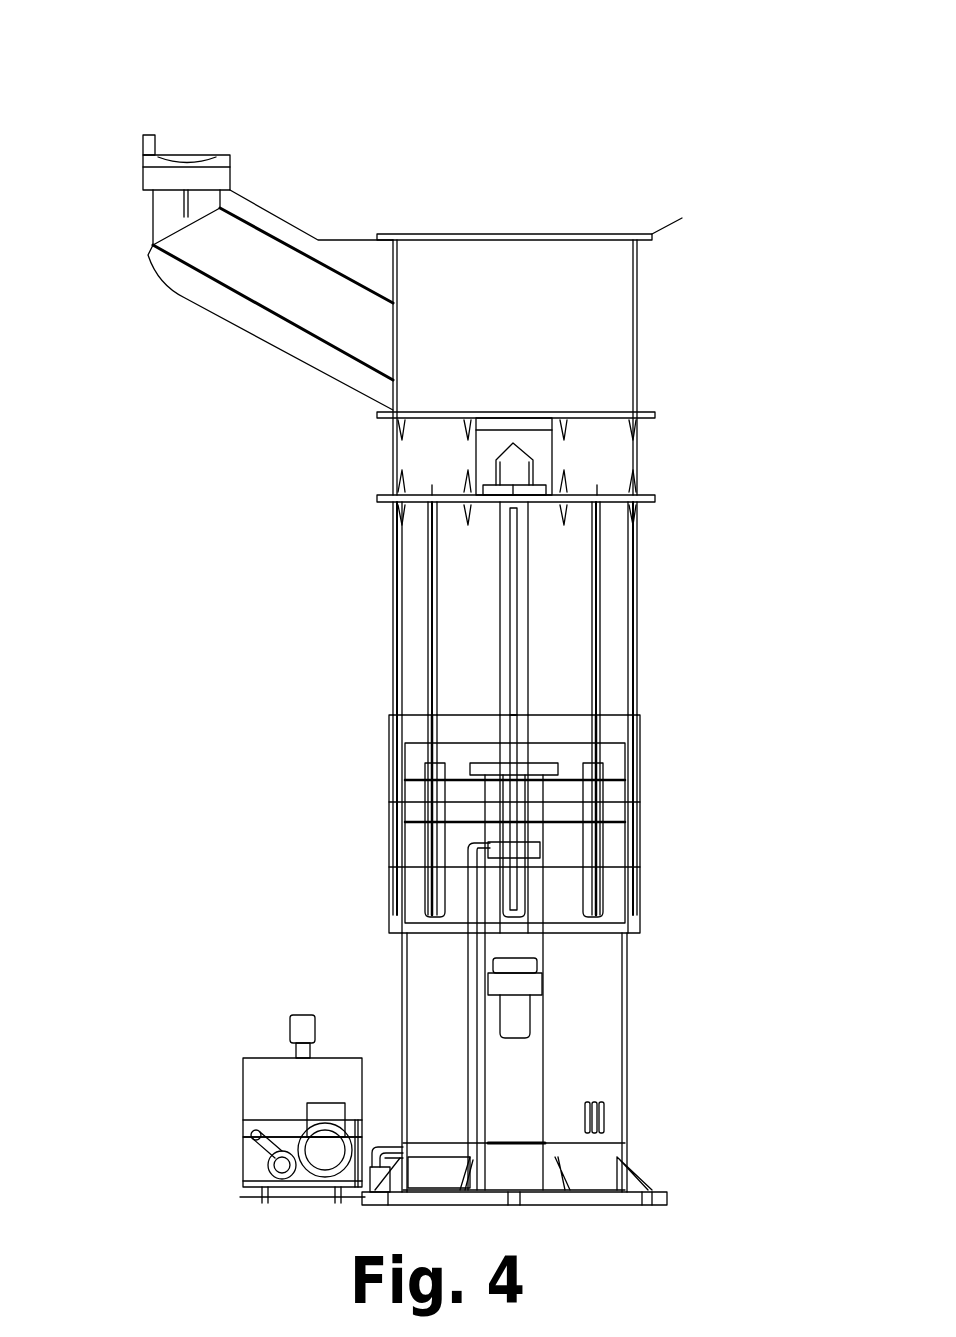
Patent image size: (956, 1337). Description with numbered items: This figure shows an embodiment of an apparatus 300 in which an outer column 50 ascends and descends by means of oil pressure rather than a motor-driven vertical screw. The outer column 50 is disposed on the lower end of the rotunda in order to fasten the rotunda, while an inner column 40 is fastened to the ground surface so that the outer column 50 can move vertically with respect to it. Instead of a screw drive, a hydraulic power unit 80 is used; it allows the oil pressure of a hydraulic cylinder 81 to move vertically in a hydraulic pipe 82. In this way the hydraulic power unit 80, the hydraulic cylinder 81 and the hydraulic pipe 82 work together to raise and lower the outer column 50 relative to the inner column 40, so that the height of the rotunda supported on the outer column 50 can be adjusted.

The apparatus 300 is at (430, 31).
The outer column 50 is at (613, 635).
The inner column 40 is at (603, 1073).
The hydraulic pipe 82 is at (467, 1003).
The hydraulic cylinder 81 is at (543, 997).
The hydraulic power unit 80 is at (240, 1075).